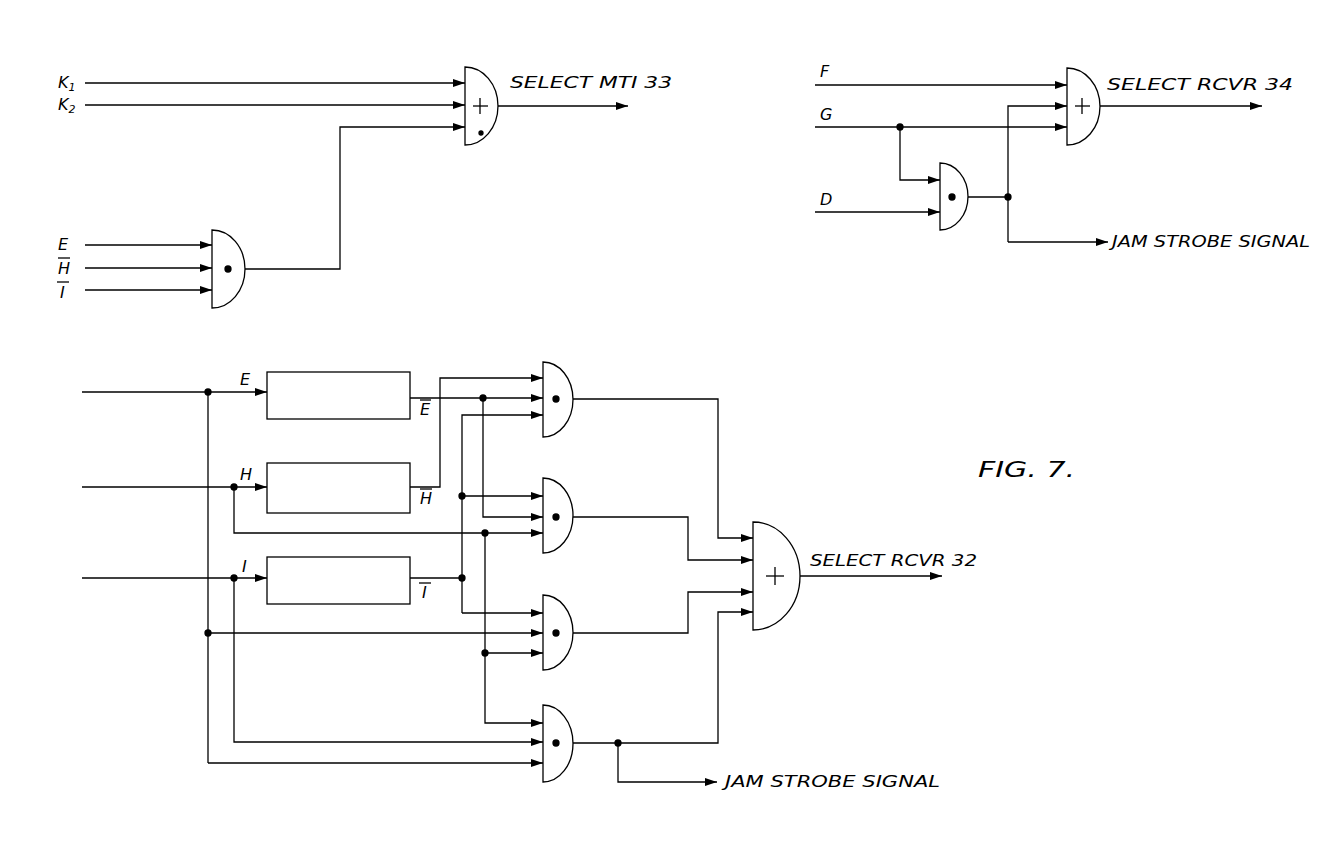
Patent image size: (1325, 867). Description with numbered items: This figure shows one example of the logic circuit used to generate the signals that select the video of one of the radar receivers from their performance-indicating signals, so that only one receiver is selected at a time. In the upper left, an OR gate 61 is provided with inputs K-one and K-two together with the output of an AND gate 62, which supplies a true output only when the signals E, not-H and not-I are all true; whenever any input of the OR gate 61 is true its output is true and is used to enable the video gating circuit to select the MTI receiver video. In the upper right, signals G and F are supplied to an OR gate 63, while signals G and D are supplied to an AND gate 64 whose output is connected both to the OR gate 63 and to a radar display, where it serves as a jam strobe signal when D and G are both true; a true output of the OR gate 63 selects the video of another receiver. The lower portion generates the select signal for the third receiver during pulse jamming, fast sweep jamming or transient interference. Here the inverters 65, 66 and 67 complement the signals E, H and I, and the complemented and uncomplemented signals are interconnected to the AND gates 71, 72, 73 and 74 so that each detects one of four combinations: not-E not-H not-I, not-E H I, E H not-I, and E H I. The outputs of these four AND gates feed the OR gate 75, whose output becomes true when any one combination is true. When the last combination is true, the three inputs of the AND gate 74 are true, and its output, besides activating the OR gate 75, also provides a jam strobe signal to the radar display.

The OR gate 61 is at (472, 76).
The AND gate 62 is at (222, 240).
The OR gate 63 is at (1073, 76).
The AND gate 64 is at (950, 175).
The inverter 65 is at (398, 372).
The inverter 66 is at (397, 463).
The inverter 67 is at (395, 572).
The AND gate 71 is at (558, 372).
The AND gate 72 is at (558, 489).
The AND gate 73 is at (558, 606).
The AND gate 74 is at (558, 717).
The OR gate 75 is at (760, 538).